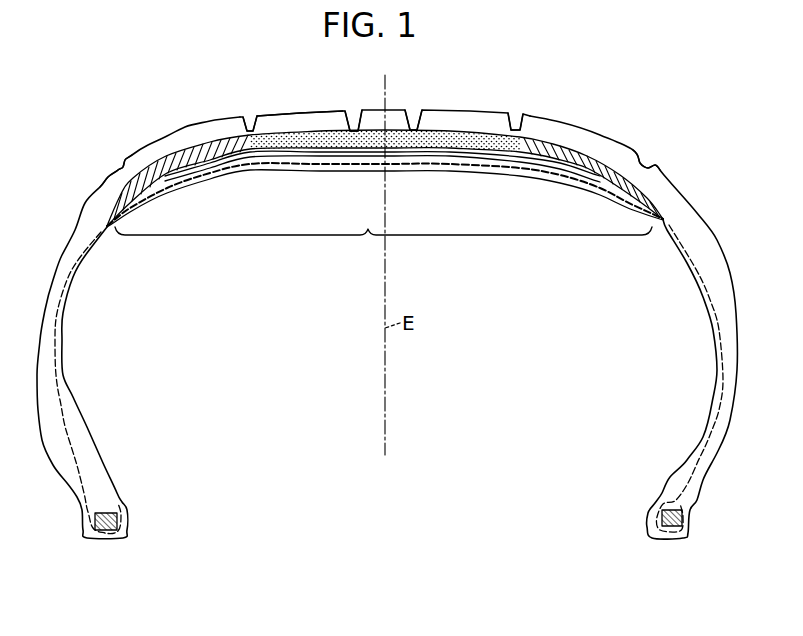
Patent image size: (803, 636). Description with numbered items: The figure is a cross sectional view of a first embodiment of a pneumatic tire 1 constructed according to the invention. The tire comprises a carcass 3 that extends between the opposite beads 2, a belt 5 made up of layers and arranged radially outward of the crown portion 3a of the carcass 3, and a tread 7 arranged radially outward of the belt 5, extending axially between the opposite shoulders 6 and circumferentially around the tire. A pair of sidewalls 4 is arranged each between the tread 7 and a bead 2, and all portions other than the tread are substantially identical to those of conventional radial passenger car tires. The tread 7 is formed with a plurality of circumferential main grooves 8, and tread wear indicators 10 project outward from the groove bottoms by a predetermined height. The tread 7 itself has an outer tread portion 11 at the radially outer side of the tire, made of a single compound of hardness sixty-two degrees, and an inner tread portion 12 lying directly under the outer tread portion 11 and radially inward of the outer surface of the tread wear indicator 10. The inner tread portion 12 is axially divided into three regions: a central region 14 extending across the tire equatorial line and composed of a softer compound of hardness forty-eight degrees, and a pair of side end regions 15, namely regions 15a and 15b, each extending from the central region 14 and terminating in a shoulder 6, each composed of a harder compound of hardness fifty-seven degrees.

The pneumatic tire 1 is at (481, 93).
The bead 2 is at (117, 515).
The carcass 3 is at (78, 260).
The crown portion 3a is at (383, 247).
The sidewall 4 is at (53, 287).
The belt 5 is at (327, 158).
The shoulder 6 is at (133, 157).
The tread 7 is at (447, 110).
The circumferential main groove 8 is at (247, 127).
The tread wear indicator 10 is at (414, 128).
The outer tread portion 11 is at (285, 112).
The inner tread portion 12 is at (215, 138).
The central region 14 is at (320, 131).
The side end regions 15 is at (386, 160).
The side end region 15a is at (172, 160).
The side end region 15b is at (577, 157).